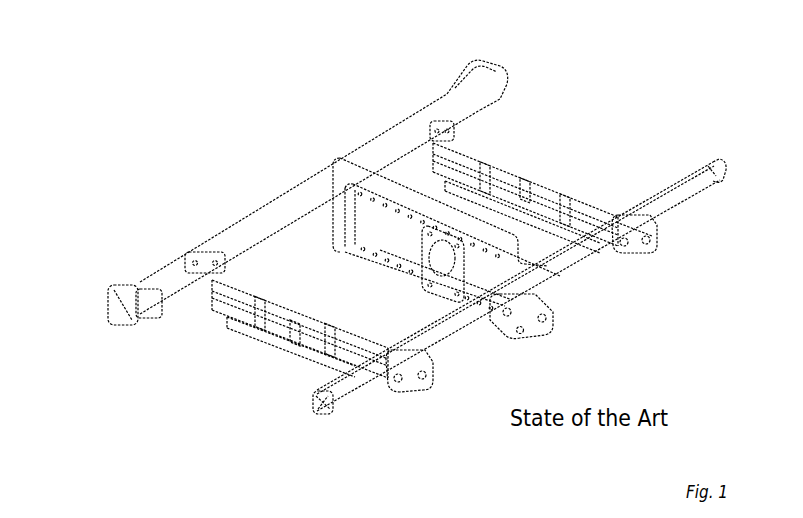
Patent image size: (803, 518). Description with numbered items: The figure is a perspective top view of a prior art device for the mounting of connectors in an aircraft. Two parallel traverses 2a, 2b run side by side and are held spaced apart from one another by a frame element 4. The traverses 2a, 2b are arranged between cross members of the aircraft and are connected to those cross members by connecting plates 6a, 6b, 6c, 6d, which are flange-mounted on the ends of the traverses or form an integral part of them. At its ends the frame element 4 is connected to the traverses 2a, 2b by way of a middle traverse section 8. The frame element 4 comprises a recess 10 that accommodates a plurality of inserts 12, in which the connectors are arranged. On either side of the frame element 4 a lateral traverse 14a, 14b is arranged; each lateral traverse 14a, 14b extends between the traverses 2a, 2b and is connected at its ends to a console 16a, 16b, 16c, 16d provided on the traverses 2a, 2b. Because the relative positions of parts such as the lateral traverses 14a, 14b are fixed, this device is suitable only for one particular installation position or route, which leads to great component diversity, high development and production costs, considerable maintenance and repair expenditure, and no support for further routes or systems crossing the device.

The traverse 2a is at (362, 149).
The traverse 2b is at (683, 200).
The frame element 4 is at (378, 268).
The connecting plate 6a is at (115, 297).
The connecting plate 6b is at (490, 72).
The connecting plate 6c is at (336, 400).
The connecting plate 6d is at (718, 169).
The middle traverse section 8 is at (545, 301).
The recess 10 is at (370, 232).
The insert 12 is at (428, 262).
The lateral traverse 14a is at (286, 338).
The lateral traverse 14b is at (537, 178).
The console 16a is at (205, 262).
The console 16b is at (415, 358).
The console 16c is at (438, 130).
The console 16d is at (644, 217).